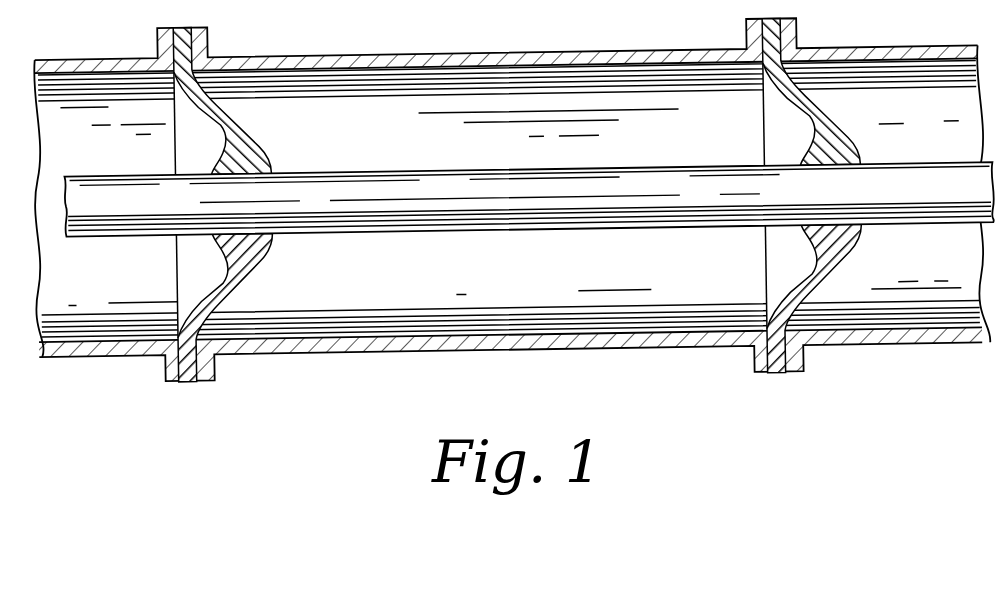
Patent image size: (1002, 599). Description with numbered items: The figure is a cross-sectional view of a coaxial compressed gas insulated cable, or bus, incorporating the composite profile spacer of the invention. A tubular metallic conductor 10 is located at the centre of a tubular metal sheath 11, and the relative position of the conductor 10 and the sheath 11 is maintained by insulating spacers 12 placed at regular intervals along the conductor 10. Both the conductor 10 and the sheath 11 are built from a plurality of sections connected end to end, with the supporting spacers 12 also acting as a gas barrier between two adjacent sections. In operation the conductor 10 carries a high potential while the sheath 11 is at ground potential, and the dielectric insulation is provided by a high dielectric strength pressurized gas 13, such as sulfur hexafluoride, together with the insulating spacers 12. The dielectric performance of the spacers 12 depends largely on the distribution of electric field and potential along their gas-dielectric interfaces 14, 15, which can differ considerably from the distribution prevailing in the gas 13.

The tubular metallic conductor 10 is at (652, 185).
The tubular metal sheath 11 is at (565, 58).
The insulating spacer 12 is at (833, 145).
The pressurized gas 13 is at (663, 274).
The gas-dielectric interface 14 is at (247, 295).
The gas-dielectric interface 15 is at (227, 270).